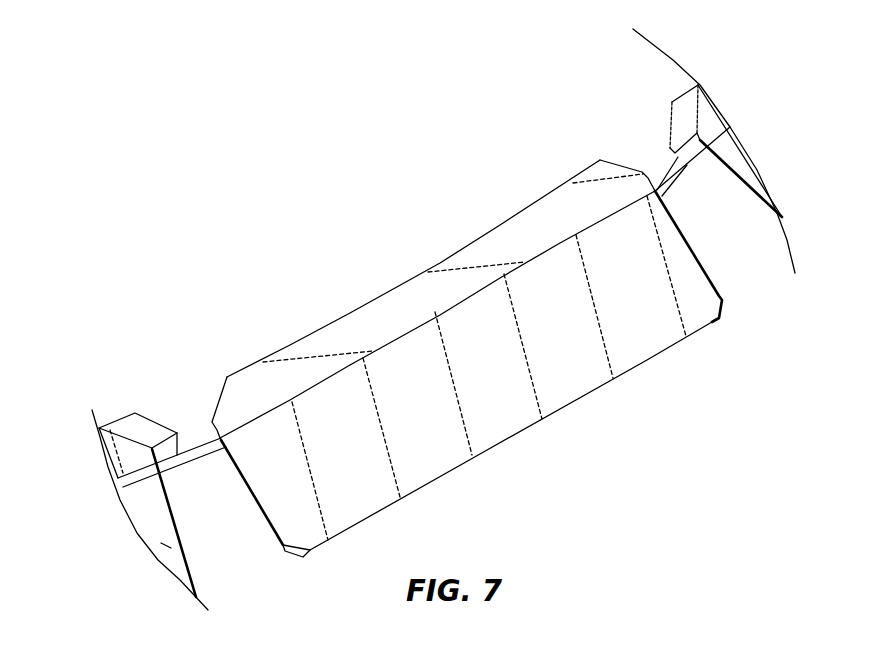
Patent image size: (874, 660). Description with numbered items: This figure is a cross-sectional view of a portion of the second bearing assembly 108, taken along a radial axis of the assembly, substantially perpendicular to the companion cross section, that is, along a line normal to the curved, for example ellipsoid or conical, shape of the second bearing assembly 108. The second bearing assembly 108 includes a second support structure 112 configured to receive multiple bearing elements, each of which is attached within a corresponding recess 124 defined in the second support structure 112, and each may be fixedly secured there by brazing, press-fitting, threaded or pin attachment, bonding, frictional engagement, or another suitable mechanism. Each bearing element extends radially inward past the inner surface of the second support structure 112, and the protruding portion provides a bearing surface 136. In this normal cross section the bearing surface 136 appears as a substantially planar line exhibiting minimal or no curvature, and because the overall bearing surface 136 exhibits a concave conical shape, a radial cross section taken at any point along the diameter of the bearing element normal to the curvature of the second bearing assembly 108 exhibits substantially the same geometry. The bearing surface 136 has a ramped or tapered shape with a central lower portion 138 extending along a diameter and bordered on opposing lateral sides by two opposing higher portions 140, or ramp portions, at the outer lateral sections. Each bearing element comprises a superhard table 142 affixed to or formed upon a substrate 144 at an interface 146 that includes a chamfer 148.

The second bearing assembly 108 is at (178, 85).
The second support structure 112 is at (232, 514).
The recess 124 is at (532, 425).
The bearing surface 136 is at (507, 220).
The central lower portion 138 is at (413, 275).
The opposing higher portions 140 is at (587, 170).
The superhard table 142 is at (330, 347).
The substrate 144 is at (350, 467).
The interface 146 is at (607, 217).
The chamfer 148 is at (217, 405).